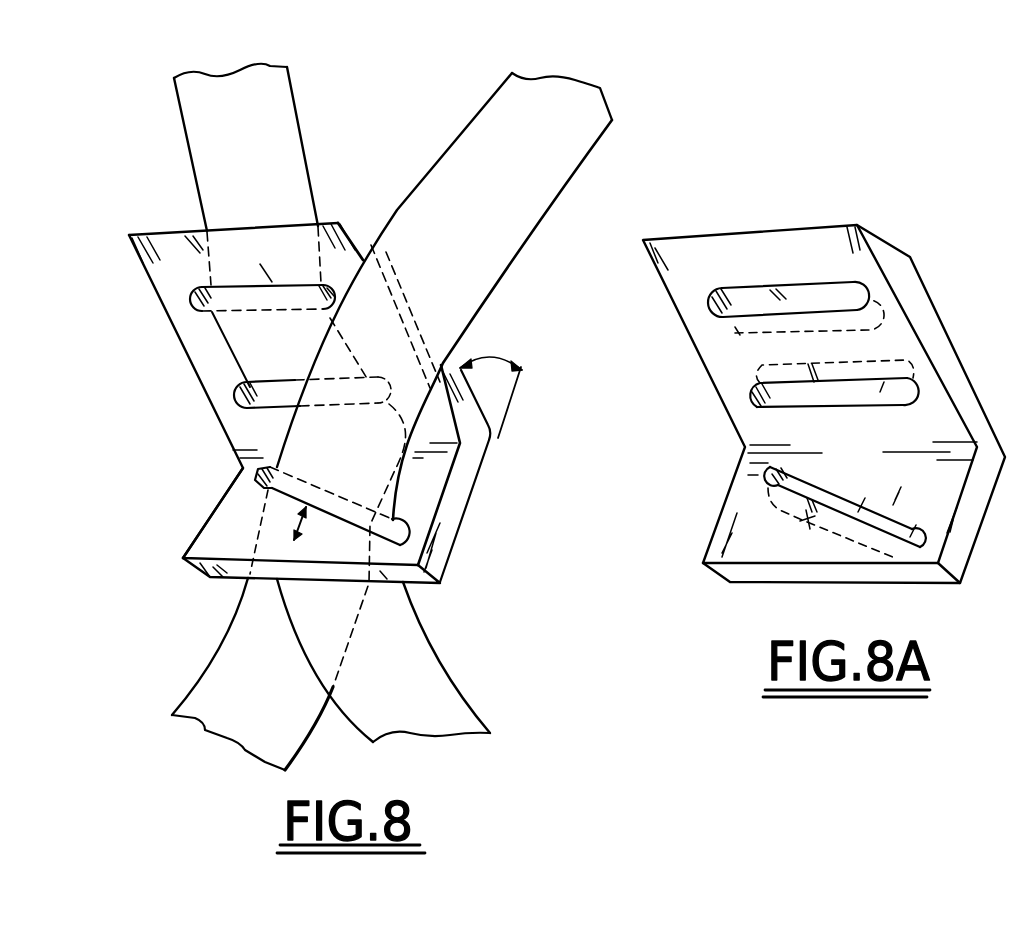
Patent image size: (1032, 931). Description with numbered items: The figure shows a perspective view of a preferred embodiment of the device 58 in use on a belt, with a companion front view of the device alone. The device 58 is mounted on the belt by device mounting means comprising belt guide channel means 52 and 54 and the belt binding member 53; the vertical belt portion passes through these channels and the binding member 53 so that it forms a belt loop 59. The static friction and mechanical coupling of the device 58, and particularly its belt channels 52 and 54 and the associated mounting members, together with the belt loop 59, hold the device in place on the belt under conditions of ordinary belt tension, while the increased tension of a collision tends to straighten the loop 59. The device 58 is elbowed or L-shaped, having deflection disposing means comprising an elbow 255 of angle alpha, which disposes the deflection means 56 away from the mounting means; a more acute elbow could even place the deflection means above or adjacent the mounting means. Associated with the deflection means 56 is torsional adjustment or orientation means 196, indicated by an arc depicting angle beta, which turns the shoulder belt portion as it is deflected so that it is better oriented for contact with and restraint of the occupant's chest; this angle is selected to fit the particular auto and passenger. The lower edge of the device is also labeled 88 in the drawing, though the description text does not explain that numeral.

The belt guide channel means 52 is at (188, 302).
The belt binding member 53 is at (200, 342).
The belt guide channel means 54 is at (240, 397).
The deflection means 56 is at (252, 472).
The device 58 is at (170, 240).
The belt loop 59 is at (285, 363).
The plate lower edge 88 is at (238, 572).
The torsional adjustment or orientation means 196 is at (297, 523).
The elbow 255 is at (492, 358).